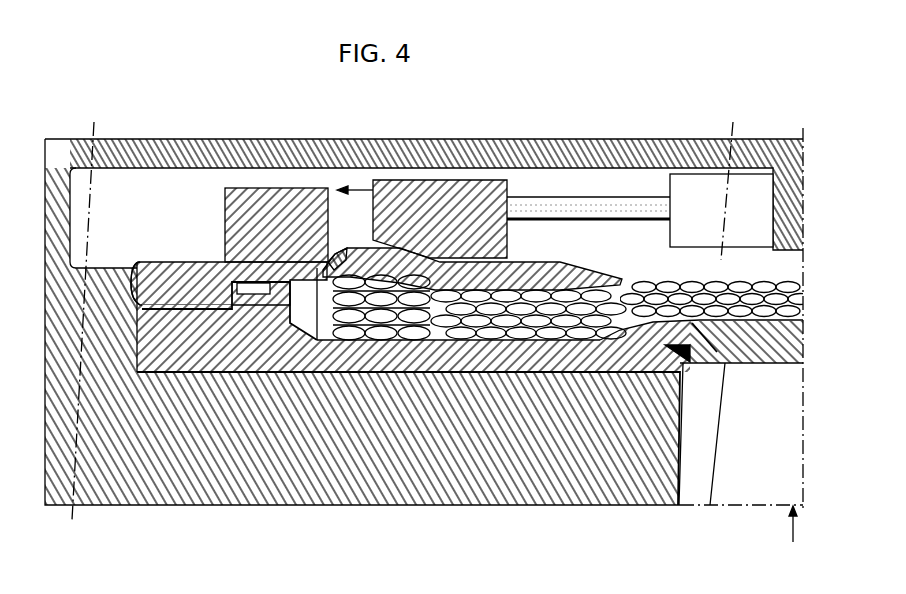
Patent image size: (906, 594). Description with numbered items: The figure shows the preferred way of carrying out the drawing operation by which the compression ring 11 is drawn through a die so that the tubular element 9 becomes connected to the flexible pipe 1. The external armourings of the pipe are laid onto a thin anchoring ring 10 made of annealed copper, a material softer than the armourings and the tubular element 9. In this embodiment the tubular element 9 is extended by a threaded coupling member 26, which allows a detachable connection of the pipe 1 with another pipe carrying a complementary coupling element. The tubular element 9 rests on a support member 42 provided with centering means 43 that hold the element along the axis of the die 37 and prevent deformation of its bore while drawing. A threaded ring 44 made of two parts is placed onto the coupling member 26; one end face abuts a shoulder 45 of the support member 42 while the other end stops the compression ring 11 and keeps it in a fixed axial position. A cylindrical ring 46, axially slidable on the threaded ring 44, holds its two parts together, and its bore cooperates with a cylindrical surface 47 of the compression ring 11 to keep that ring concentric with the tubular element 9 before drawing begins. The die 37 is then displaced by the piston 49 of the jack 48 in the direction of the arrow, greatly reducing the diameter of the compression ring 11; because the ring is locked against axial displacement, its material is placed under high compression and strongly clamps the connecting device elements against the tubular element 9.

The flexible pipe 1 is at (788, 525).
The tubular element 9 is at (577, 357).
The anchoring ring 10 is at (358, 340).
The compression ring 11 is at (567, 268).
The threaded coupling member 26 is at (215, 348).
The die 37 is at (437, 202).
The support member 42 is at (388, 153).
The centering means 43 is at (337, 480).
The threaded ring 44 is at (183, 272).
The shoulder 45 is at (152, 270).
The cylindrical ring 46 is at (263, 202).
The cylindrical surface 47 is at (348, 255).
The jack 48 is at (693, 190).
The piston 49 is at (583, 203).